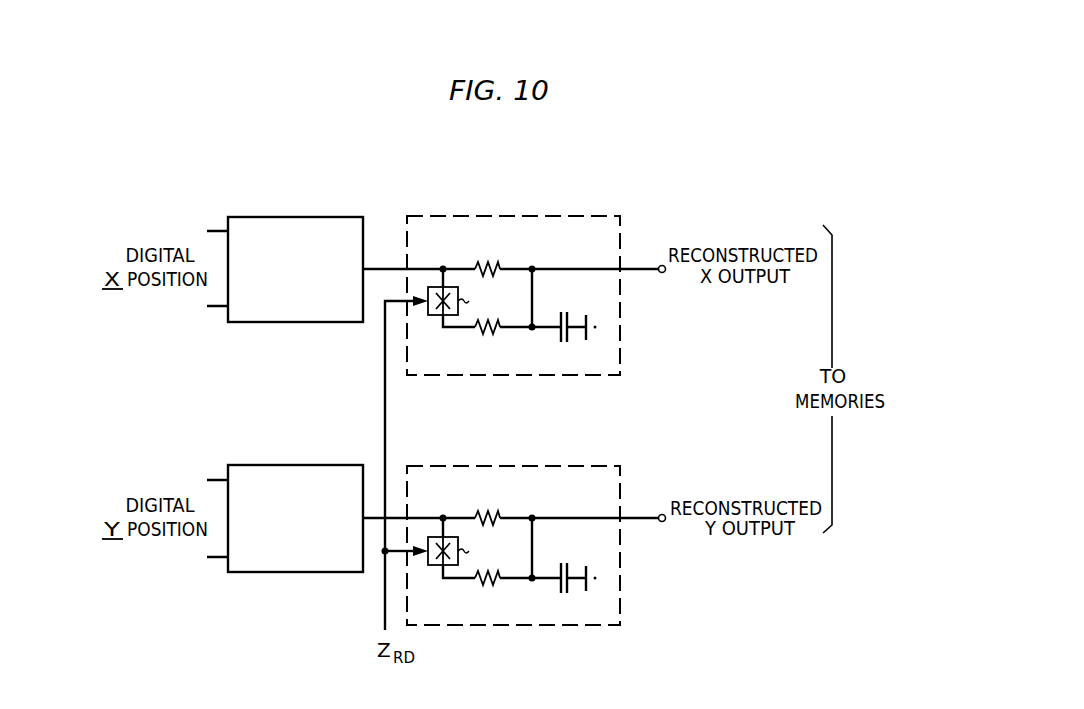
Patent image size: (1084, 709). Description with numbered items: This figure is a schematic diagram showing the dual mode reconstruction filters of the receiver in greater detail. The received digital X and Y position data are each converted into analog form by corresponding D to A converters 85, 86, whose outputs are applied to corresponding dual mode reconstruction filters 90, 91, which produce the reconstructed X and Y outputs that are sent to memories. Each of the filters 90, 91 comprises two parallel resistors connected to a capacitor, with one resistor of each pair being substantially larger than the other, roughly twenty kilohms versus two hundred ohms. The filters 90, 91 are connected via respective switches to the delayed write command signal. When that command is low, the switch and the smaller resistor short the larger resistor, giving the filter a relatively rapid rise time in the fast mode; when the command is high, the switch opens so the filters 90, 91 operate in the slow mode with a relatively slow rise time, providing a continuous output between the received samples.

The D to A converter 85 is at (343, 217).
The D to A converter 86 is at (349, 465).
The dual mode reconstruction filter 90 is at (583, 373).
The dual mode reconstruction filter 91 is at (588, 623).